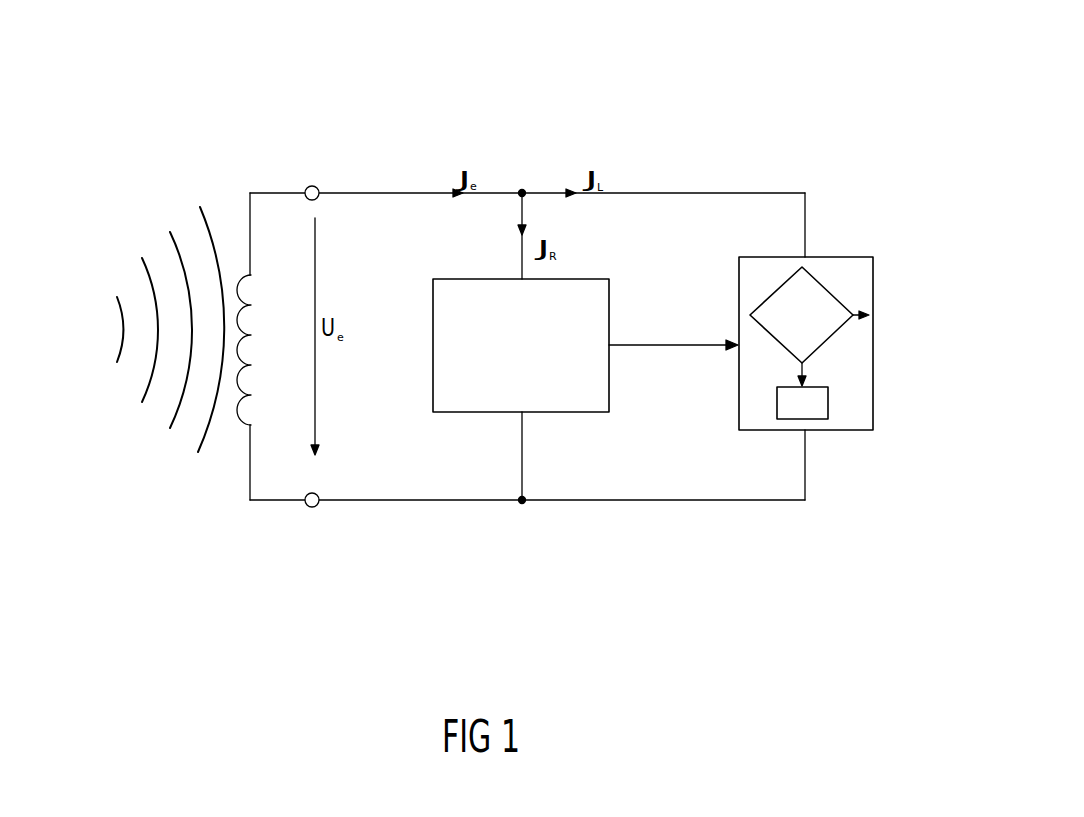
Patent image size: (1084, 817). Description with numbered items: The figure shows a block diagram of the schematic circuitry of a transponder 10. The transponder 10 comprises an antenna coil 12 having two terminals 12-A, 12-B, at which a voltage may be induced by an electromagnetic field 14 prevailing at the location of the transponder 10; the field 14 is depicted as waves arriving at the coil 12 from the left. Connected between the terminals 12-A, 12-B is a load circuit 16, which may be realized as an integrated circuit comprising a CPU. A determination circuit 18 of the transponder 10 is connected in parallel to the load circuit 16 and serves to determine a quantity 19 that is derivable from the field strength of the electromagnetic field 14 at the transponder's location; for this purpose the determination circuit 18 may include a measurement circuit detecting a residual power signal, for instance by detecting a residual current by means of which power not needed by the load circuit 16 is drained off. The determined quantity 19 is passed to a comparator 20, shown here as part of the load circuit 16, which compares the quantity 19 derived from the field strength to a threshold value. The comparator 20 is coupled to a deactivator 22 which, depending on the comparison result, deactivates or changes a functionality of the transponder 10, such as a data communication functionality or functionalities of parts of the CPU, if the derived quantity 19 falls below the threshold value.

The transponder 10 is at (786, 89).
The antenna coil 12 is at (258, 378).
The terminal 12-A is at (312, 186).
The terminal 12-B is at (312, 507).
The electromagnetic field 14 is at (137, 235).
The load circuit 16 is at (873, 370).
The determination circuit 18 is at (433, 345).
The quantity 19 is at (670, 343).
The comparator 20 is at (820, 278).
The deactivator 22 is at (815, 420).